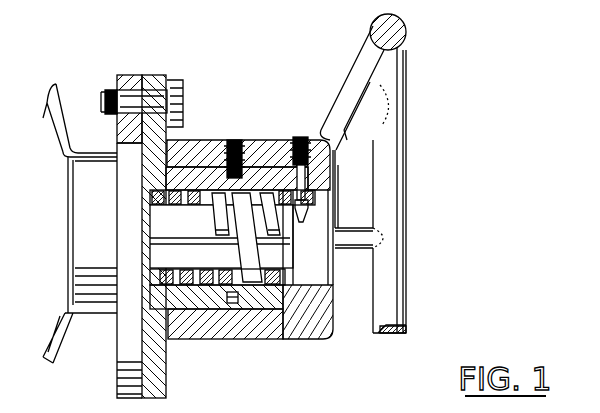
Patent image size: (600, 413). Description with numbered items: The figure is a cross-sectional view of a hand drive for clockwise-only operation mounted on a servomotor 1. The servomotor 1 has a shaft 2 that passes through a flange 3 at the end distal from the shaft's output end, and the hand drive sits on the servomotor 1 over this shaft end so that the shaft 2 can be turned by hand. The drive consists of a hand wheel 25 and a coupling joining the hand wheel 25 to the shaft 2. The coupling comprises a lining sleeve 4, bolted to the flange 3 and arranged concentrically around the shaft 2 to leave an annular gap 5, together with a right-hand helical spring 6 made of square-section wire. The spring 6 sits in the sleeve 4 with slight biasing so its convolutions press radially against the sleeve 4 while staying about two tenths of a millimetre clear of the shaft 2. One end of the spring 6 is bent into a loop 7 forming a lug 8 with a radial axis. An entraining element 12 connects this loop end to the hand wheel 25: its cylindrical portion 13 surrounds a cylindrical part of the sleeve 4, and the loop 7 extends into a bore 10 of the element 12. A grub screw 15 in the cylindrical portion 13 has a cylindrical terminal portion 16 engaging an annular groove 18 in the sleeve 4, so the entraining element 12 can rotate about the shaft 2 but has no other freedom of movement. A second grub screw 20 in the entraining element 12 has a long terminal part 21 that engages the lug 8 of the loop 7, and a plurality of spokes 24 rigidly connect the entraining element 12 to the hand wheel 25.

The servomotor 1 is at (66, 340).
The shaft 2 is at (152, 217).
The flange 3 is at (115, 380).
The lining sleeve 4 is at (195, 300).
The annular gap 5 is at (150, 278).
The right-hand helical spring 6 is at (213, 229).
The loop 7 is at (337, 211).
The lug 8 is at (299, 210).
The bore 10 is at (320, 278).
The entraining element 12 is at (312, 305).
The cylindrical portion 13 is at (268, 145).
The grub screw 15 is at (232, 142).
The cylindrical terminal portion 16 is at (216, 189).
The annular groove 18 is at (232, 304).
The second grub screw 20 is at (307, 137).
The long terminal part 21 is at (303, 184).
The spokes 24 is at (365, 72).
The hand wheel 25 is at (408, 62).